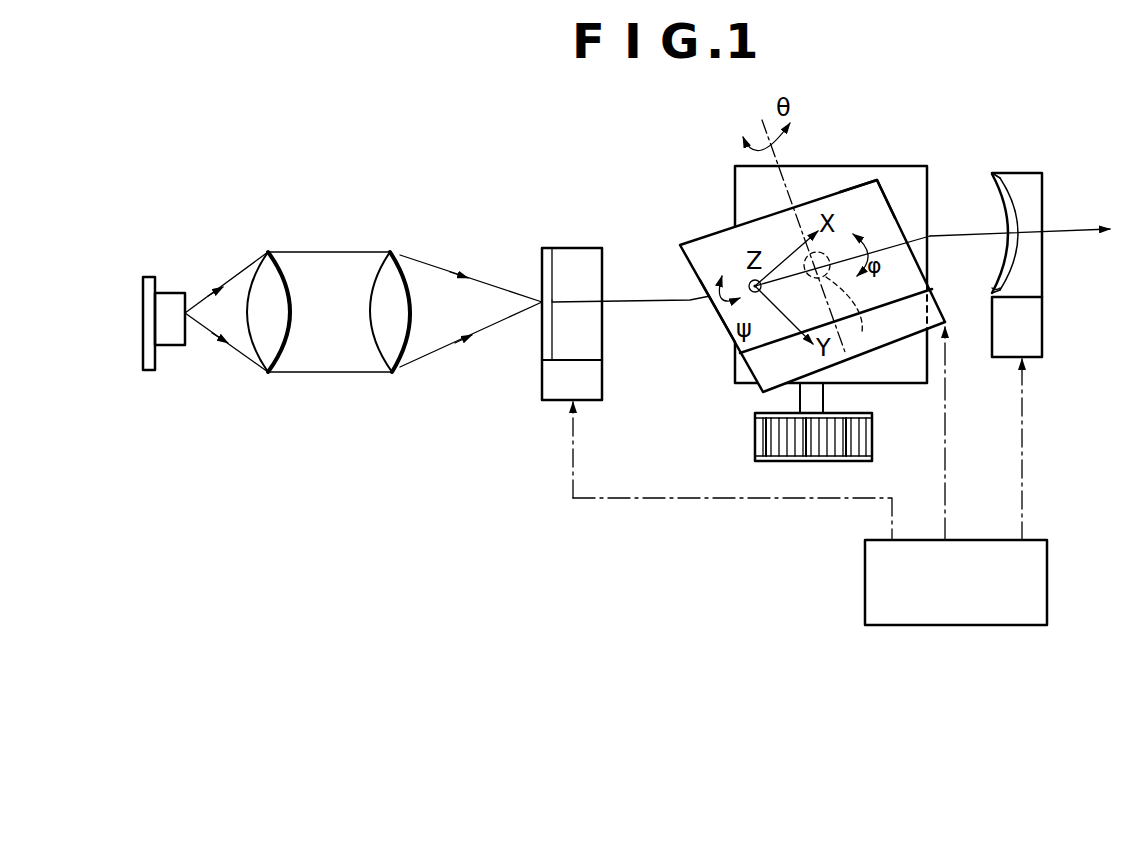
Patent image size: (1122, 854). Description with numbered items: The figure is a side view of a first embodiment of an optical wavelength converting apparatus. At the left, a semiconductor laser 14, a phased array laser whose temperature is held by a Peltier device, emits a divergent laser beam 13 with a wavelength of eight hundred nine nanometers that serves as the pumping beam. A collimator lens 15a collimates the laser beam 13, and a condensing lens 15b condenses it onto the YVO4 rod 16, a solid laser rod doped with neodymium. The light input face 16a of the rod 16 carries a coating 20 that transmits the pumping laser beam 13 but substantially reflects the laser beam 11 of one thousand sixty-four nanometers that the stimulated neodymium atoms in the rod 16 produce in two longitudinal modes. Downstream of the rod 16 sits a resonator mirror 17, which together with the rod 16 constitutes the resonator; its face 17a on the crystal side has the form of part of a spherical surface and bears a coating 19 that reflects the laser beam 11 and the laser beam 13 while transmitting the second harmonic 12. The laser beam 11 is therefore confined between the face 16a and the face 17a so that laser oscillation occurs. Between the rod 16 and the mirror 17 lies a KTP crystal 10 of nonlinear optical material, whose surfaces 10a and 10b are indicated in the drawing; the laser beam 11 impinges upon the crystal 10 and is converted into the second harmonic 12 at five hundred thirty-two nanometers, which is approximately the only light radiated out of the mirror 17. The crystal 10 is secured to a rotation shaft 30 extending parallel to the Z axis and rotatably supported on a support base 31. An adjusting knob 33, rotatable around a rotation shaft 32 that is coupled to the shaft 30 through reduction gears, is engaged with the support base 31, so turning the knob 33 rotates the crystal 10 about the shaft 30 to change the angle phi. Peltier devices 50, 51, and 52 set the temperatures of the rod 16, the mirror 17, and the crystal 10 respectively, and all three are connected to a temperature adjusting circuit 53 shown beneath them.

The KTP crystal 10 is at (700, 222).
The first surface of optical element 10a is at (722, 327).
The second surface of optical element 10b is at (887, 179).
The laser beam 11 is at (946, 231).
The second harmonic 12 is at (1073, 228).
The laser beam 13 is at (249, 270).
The semiconductor laser 14 is at (178, 293).
The collimator lens 15a is at (284, 262).
The condensing lens 15b is at (377, 270).
The YVO4 rod 16 is at (579, 239).
The light input face 16a is at (542, 268).
The resonator mirror 17 is at (1039, 169).
The face 17a is at (1000, 190).
The coating 19 is at (995, 289).
The coating 20 is at (542, 342).
The rotation shaft 30 is at (853, 298).
The support base 31 is at (733, 363).
The rotation shaft 32 is at (822, 398).
The adjusting knob 33 is at (773, 435).
The Peltier device 50 is at (553, 402).
The Peltier device 51 is at (1028, 327).
The Peltier device 52 is at (780, 363).
The temperature adjusting circuit 53 is at (982, 597).